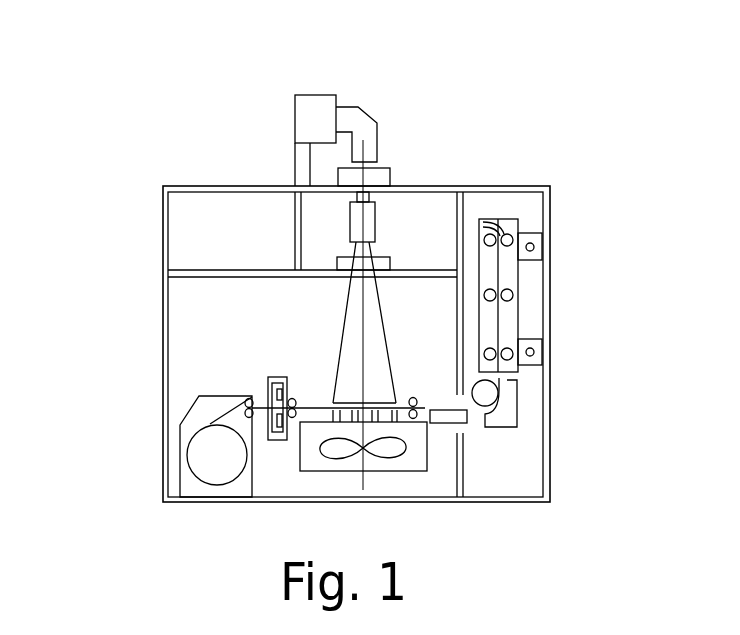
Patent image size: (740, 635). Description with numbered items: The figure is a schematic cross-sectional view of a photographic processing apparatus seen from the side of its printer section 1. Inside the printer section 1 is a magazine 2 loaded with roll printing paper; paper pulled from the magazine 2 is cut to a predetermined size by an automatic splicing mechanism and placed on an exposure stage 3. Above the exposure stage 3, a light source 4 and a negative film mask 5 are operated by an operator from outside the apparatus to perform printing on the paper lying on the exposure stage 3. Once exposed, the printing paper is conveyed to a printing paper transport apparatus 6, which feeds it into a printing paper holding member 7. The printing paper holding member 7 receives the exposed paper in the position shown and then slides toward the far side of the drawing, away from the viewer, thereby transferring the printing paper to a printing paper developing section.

The printer section 1 is at (148, 353).
The magazine 2 is at (210, 470).
The exposure stage 3 is at (385, 415).
The light source 4 is at (322, 103).
The negative film mask 5 is at (392, 167).
The printing paper transport apparatus 6 is at (519, 283).
The printing paper holding member 7 is at (505, 225).